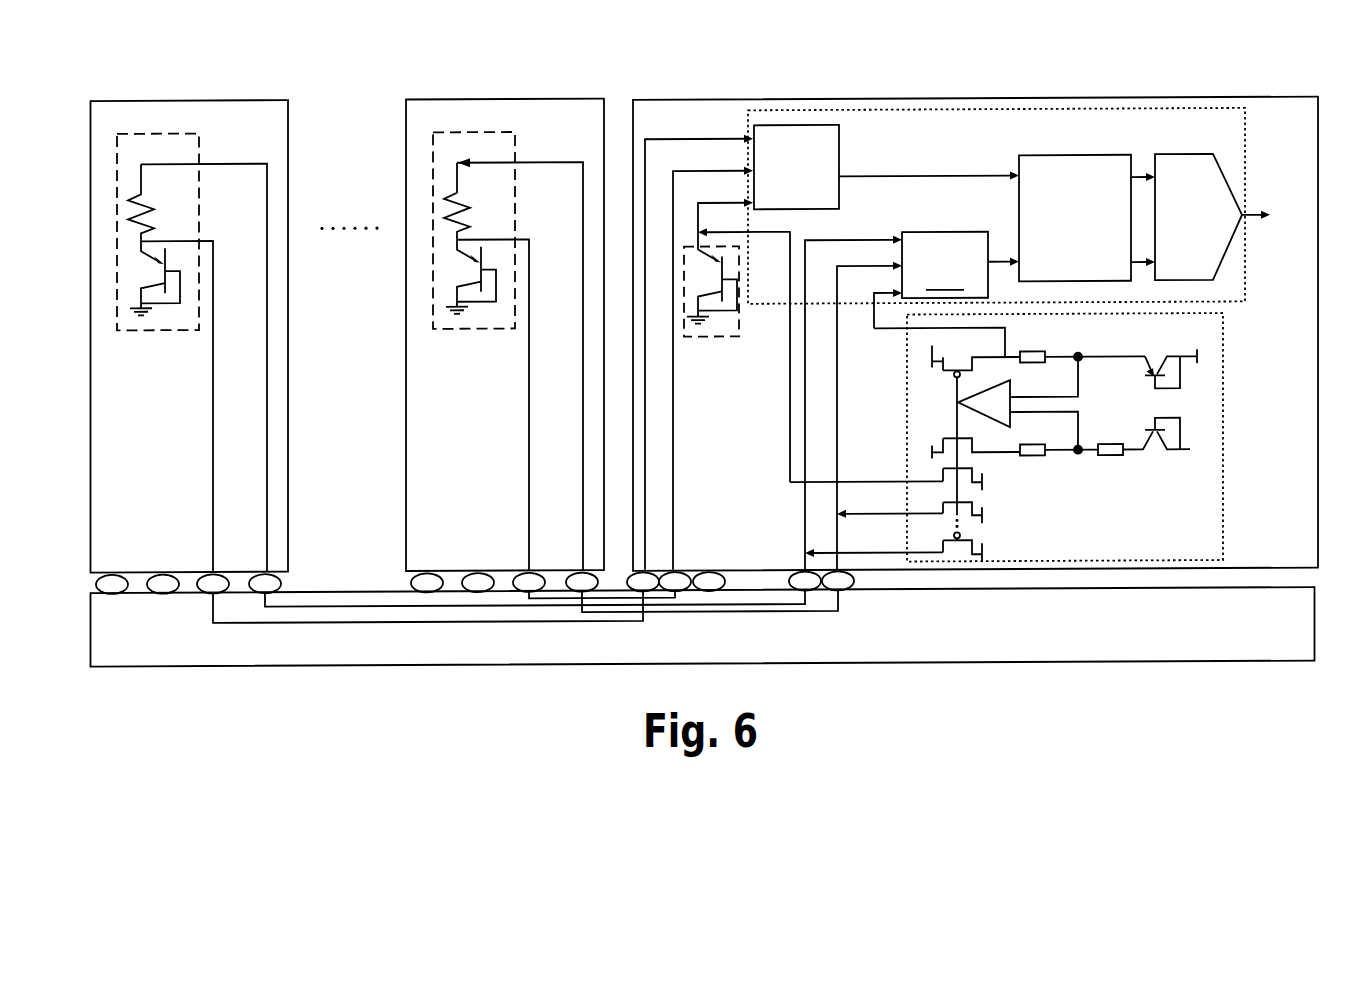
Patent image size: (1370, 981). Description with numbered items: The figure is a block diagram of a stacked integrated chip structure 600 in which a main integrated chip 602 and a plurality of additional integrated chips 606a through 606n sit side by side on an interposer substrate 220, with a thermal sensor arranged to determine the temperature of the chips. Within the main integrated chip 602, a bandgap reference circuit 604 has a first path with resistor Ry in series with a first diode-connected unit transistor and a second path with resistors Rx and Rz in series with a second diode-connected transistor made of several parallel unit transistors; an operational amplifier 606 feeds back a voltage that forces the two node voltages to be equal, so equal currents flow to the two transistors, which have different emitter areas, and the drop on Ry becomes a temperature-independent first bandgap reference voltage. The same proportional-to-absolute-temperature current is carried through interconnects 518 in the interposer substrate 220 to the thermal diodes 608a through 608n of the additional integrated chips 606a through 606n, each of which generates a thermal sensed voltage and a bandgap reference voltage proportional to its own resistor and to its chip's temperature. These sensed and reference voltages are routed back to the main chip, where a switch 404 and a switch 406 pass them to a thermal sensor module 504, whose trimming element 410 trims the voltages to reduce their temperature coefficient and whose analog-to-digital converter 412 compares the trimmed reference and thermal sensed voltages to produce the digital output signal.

The stacked integrated chip structure 600 is at (126, 37).
The additional integrated chip 606n is at (272, 102).
The additional thermal diode 608n is at (193, 134).
The first additional integrated chip 606a is at (583, 102).
The additional thermal diode 608a is at (497, 134).
The main integrated chip 602 is at (1249, 103).
The thermal sensor module 504 is at (1246, 133).
The switch 404 is at (777, 196).
The switch / reference transistor 406 is at (716, 341).
The trimming element 410 is at (1056, 260).
The analog-to-digital converter 412 is at (1169, 246).
The bandgap reference circuit 604 is at (1225, 346).
The operational amplifier 606 is at (1013, 393).
The interconnect wiring 518 is at (864, 629).
The interposer substrate 220 is at (1315, 623).